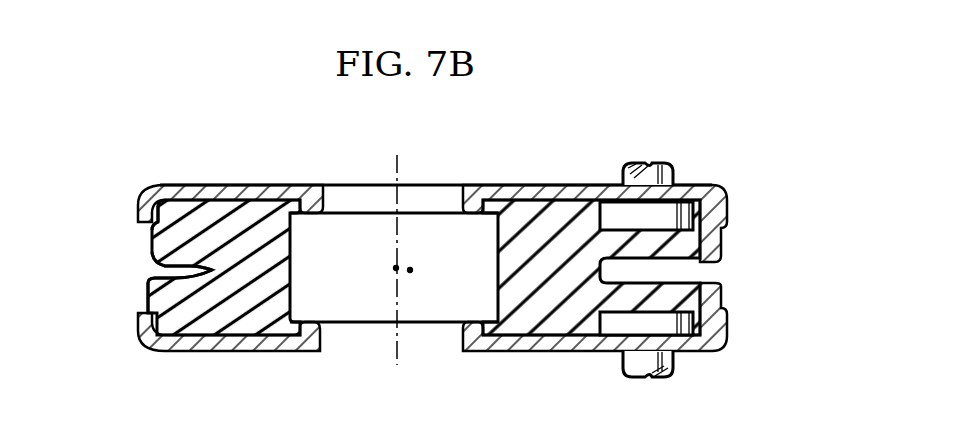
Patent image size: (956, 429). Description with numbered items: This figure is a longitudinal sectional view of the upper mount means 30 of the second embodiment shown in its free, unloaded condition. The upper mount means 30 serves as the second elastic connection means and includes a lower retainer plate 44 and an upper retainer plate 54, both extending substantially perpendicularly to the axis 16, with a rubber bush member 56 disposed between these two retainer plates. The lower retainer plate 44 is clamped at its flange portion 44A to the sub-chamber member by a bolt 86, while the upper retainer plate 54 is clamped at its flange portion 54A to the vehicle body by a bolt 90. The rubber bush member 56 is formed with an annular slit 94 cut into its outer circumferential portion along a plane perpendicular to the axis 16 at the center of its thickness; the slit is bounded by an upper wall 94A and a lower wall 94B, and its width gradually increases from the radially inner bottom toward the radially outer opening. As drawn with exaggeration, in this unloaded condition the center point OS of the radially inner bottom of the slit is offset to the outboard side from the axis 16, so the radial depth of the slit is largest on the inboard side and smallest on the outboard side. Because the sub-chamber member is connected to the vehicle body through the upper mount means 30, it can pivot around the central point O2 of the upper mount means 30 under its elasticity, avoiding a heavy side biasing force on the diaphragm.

The upper mount means 30 is at (130, 185).
The upper wall of the slit 94A is at (168, 226).
The upper retainer plate 54 is at (247, 193).
The axis 16 is at (405, 178).
The rubber bush member 56 is at (542, 208).
The bolt 90 is at (623, 186).
The flange portion of the upper retainer plate 54A is at (716, 195).
The lower wall of the slit 94B is at (175, 278).
The annular slit 94 is at (200, 285).
The lower retainer plate 44 is at (292, 346).
The bolt 86 is at (623, 366).
The flange portion of the lower retainer plate 44A is at (712, 346).
The central point of the upper mount means O2 is at (396, 268).
The center point of the radially inner bottom of the slit OS is at (410, 270).